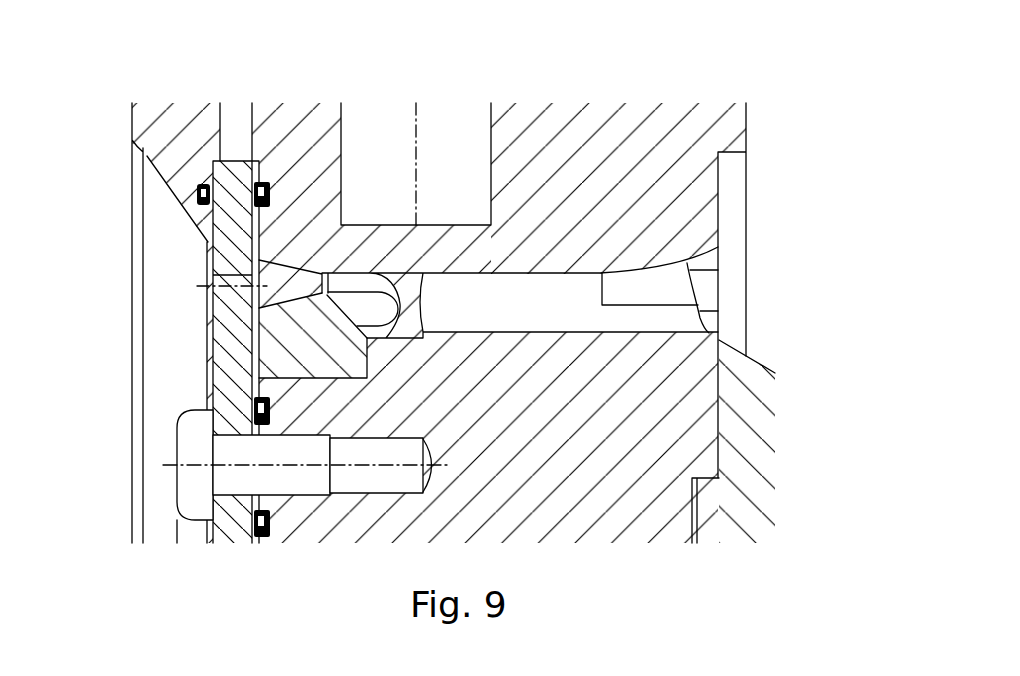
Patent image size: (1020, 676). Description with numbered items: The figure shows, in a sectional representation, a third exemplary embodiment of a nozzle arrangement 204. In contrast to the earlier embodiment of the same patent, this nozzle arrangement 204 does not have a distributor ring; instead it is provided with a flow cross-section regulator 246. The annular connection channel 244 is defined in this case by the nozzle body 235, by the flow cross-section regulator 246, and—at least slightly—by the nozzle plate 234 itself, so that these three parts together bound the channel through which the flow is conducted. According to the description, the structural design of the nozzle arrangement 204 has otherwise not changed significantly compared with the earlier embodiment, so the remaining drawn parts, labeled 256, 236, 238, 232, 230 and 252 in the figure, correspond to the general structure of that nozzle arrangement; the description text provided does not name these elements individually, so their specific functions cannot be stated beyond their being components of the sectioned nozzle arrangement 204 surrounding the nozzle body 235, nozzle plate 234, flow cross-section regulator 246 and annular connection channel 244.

The nozzle arrangement 204 is at (106, 74).
The frame member 256 is at (182, 132).
The pin 236 is at (238, 124).
The slot 238 is at (442, 142).
The nozzle body 235 is at (610, 140).
The nozzle plate 234 is at (227, 257).
The annular connection channel 244 is at (273, 297).
The flow cross-section regulator 246 is at (287, 361).
The seal 232 is at (677, 320).
The base body 230 is at (750, 452).
The bolt 252 is at (312, 483).